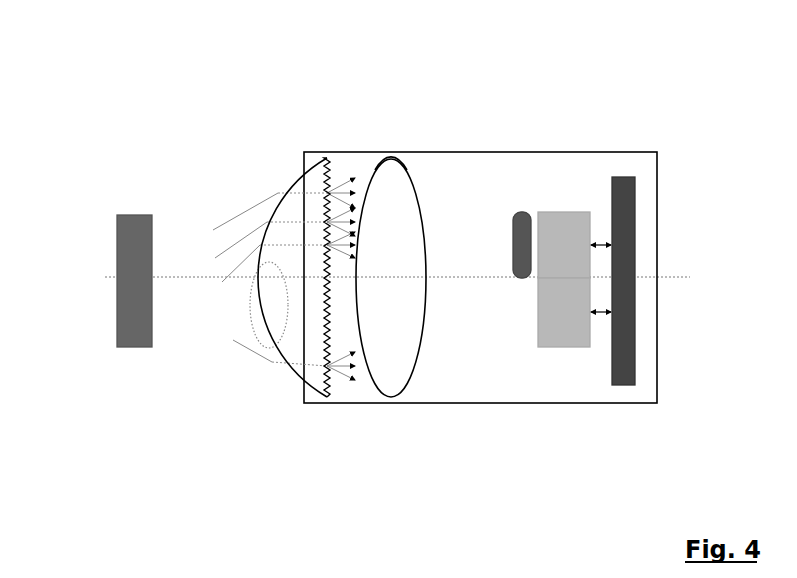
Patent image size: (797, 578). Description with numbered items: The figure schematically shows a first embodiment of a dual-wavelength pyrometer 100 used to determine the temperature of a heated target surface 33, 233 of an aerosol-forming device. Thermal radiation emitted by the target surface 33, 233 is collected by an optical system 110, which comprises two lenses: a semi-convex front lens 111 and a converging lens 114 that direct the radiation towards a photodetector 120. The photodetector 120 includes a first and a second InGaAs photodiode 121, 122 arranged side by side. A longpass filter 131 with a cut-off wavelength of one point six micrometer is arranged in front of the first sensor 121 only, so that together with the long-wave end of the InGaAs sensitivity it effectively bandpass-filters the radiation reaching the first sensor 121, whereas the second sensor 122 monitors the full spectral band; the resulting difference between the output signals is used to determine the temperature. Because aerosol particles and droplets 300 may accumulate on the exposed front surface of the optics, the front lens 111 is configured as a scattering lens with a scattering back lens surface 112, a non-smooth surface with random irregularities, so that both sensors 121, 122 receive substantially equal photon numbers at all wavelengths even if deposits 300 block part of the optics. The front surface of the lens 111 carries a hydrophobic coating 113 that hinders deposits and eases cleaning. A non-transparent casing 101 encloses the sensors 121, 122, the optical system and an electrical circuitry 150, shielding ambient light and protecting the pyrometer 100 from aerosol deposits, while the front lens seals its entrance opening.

The dual-wavelength pyrometer 100 is at (644, 96).
The optical system 110 is at (295, 275).
The semi-convex lens 111 is at (295, 175).
The scattering back lens surface 112 is at (330, 385).
The hydrophobic coating 113 is at (291, 386).
The converging lens 114 is at (388, 158).
The casing 101 is at (403, 295).
The longpass filter 131 is at (519, 209).
The photodetector 120 is at (550, 292).
The first InGaAs photodiode 121 is at (565, 211).
The second InGaAs photodiode 122 is at (563, 340).
The electrical circuitry 150 is at (623, 380).
The target surface 33 is at (157, 255).
The target surface 233 is at (154, 234).
The aerosol particles and droplets 300 is at (255, 315).